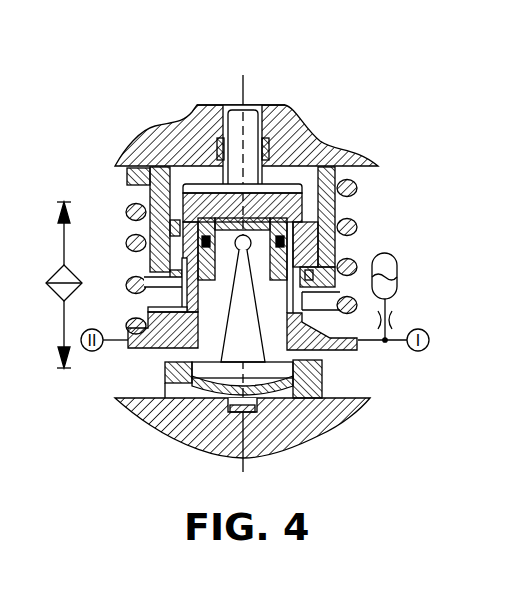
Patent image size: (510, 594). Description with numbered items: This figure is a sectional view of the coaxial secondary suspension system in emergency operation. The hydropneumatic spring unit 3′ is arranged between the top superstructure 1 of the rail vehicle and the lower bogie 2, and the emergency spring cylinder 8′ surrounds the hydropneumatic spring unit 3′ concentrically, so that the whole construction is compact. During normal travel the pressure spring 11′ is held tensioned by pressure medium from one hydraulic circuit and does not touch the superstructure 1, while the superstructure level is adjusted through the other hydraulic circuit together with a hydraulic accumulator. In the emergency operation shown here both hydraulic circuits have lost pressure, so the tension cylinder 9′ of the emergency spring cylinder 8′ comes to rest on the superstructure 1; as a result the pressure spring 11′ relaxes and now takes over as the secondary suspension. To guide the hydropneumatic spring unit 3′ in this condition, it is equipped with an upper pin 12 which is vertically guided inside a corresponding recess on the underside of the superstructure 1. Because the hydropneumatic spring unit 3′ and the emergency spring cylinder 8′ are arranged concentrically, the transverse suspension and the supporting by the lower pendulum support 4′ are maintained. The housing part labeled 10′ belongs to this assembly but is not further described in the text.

The superstructure 1 is at (298, 136).
The bogie 2 is at (327, 413).
The hydropneumatic spring unit 3′ is at (338, 361).
The pendulum support 4′ is at (235, 338).
The emergency spring cylinder 8′ is at (133, 358).
The tension cylinder 9′ is at (328, 247).
The piston 10′ is at (190, 197).
The pressure spring 11′ is at (352, 222).
The upper pin 12 is at (255, 133).